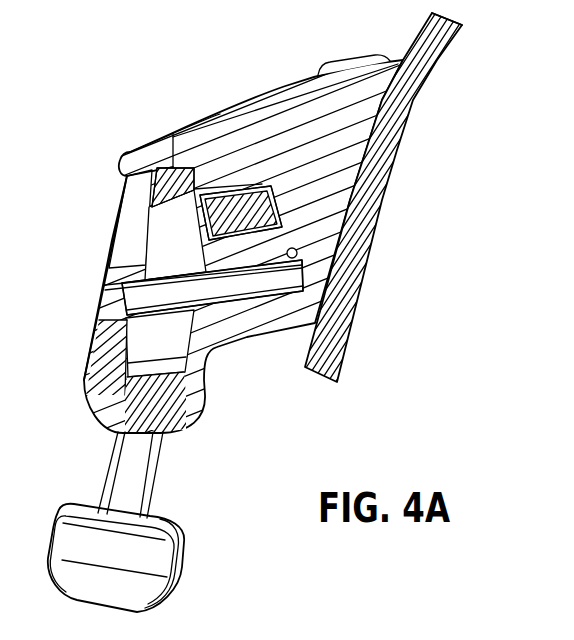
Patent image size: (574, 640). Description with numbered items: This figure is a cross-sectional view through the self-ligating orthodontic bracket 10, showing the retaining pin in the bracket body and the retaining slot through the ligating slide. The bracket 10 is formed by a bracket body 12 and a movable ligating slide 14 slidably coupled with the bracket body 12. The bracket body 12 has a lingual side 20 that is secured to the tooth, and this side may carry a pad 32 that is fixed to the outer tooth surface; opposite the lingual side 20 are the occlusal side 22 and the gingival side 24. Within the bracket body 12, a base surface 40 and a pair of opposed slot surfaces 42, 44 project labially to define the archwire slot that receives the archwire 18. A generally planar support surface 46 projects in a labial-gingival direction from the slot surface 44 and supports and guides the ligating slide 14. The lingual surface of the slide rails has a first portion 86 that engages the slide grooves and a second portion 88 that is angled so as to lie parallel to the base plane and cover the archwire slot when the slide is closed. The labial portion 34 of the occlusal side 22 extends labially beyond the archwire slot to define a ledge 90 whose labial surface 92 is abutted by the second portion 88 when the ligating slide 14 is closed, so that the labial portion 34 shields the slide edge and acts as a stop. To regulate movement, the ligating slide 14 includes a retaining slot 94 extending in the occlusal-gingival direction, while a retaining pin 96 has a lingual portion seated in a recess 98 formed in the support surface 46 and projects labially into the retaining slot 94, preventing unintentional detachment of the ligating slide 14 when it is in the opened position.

The orthodontic bracket 10 is at (64, 134).
The bracket body 12 is at (334, 49).
The ligating slide 14 is at (113, 237).
The archwire 18 is at (262, 186).
The lingual side 20 is at (408, 136).
The occlusal side 22 is at (357, 55).
The gingival side 24 is at (270, 332).
The pad 32 is at (465, 26).
The labial portion 34 is at (132, 150).
The base surface 40 is at (280, 205).
The slot surface 42 is at (208, 190).
The slot surface 44 is at (262, 232).
The support surface 46 is at (201, 408).
The first portion 86 is at (188, 336).
The second portion 88 is at (150, 213).
The ledge 90 is at (160, 174).
The labial surface 92 is at (173, 134).
The retaining slot 94 is at (129, 375).
The retaining pin 96 is at (176, 275).
The recess 98 is at (297, 250).